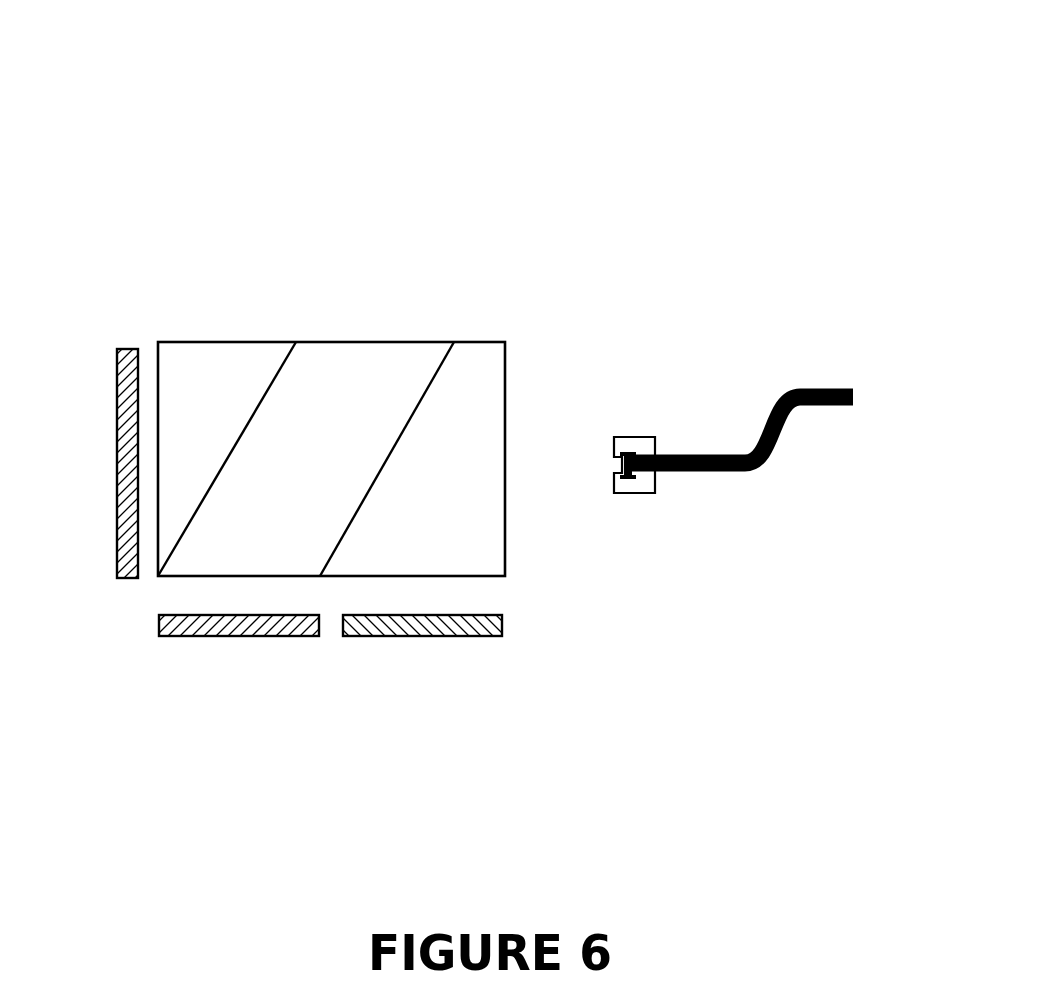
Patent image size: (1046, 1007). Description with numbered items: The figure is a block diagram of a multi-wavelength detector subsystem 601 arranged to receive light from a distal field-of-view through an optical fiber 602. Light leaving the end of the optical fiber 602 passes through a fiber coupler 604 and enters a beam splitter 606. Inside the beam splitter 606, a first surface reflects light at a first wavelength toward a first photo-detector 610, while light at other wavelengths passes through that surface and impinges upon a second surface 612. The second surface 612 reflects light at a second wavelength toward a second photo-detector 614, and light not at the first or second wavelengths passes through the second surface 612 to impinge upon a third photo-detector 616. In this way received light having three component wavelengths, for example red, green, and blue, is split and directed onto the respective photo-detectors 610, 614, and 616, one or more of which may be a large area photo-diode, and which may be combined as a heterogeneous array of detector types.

The multi-wavelength detector subsystem 601 is at (769, 81).
The optical fiber 602 is at (770, 418).
The fiber coupler 604 is at (627, 437).
The beam splitter 606 is at (352, 342).
The first photo-detector 610 is at (430, 636).
The second surface 612 is at (247, 420).
The second photo-detector 614 is at (250, 636).
The third photo-detector 616 is at (117, 482).